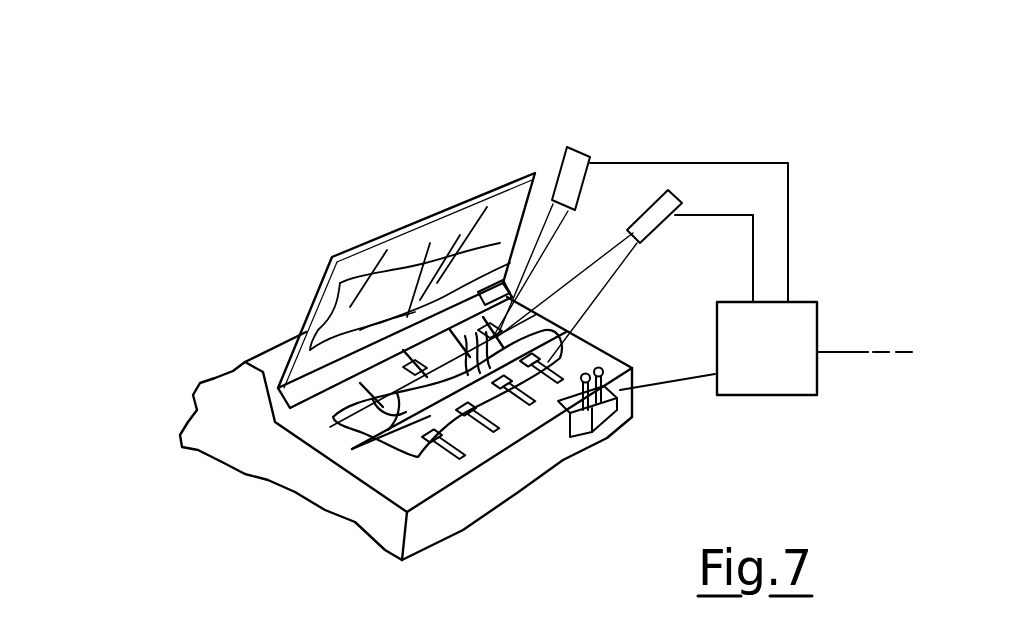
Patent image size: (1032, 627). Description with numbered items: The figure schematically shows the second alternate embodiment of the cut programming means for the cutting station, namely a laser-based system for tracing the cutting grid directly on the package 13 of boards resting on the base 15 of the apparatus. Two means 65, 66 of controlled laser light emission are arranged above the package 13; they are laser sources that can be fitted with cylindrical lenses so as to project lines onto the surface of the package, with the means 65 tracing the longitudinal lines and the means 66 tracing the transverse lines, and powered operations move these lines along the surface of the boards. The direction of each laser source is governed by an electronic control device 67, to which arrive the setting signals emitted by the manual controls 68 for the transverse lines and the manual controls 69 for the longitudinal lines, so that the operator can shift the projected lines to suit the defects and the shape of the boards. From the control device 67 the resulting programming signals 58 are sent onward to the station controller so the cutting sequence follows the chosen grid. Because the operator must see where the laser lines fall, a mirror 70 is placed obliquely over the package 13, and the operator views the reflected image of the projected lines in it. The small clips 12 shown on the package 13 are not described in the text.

The clips 12 is at (537, 358).
The package 13 is at (370, 477).
The measuring apparatus base 15 is at (264, 332).
The signals 58 is at (848, 350).
The controlled laser light emission means 65 is at (652, 222).
The controlled laser light emission means 66 is at (568, 160).
The control unit 67 is at (762, 373).
The manual controls 68 is at (590, 374).
The manual controls 69 is at (618, 362).
The mirror 70 is at (373, 250).